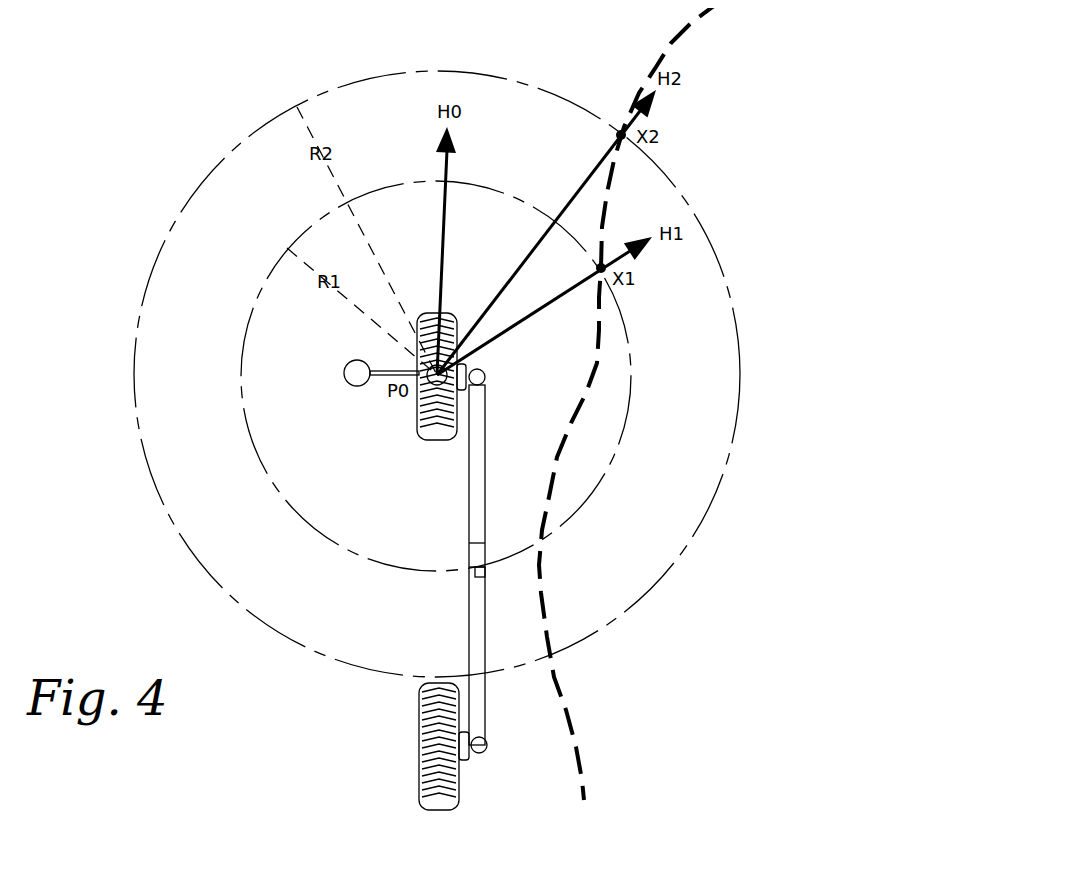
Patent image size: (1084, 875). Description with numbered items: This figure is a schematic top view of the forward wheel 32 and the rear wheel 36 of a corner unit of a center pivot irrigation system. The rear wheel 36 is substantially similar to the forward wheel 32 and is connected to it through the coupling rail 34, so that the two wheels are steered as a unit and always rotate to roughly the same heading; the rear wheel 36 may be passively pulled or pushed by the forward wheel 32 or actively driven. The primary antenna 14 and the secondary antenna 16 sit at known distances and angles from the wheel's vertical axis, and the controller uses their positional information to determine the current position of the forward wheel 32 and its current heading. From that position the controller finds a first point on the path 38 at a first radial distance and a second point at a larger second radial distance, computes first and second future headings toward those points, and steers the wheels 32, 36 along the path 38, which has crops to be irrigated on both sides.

The primary antenna 14 is at (420, 418).
The secondary antenna 16 is at (348, 367).
The forward wheel 32 is at (411, 472).
The coupling rail 34 is at (487, 480).
The rear wheel 36 is at (500, 806).
The path 38 is at (693, 23).